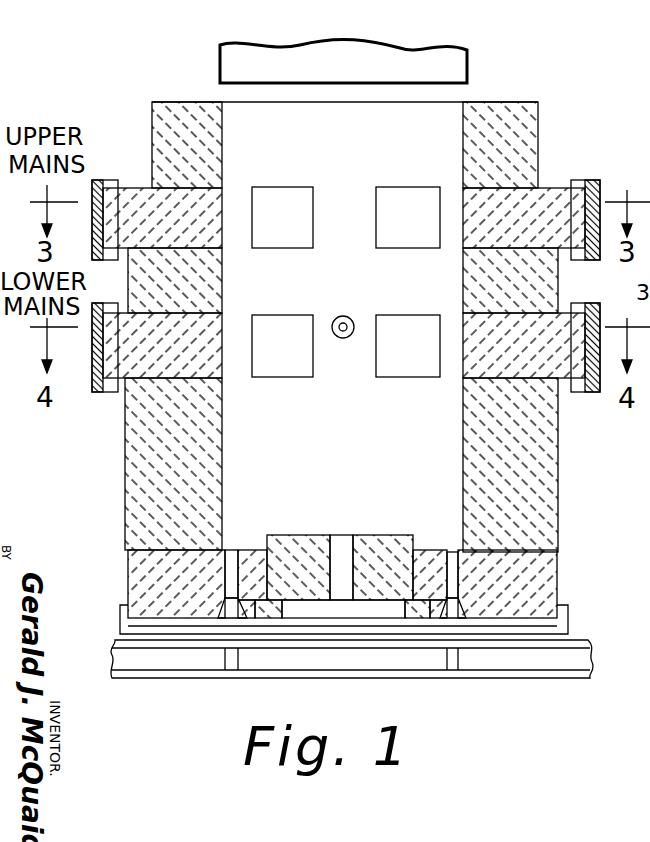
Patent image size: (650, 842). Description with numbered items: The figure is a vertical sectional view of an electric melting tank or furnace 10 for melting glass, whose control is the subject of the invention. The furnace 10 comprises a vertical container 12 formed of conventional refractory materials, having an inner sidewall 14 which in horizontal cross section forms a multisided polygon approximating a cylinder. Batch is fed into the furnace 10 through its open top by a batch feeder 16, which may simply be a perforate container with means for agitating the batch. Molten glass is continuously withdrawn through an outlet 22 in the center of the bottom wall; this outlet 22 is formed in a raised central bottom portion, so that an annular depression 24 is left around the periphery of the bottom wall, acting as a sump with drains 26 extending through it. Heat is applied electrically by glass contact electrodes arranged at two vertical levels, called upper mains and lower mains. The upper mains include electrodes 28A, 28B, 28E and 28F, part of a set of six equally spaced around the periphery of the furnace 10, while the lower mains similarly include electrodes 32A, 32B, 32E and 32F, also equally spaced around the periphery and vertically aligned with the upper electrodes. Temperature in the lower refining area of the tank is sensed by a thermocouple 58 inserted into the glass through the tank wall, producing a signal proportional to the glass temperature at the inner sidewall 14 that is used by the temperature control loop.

The electric melting tank or furnace 10 is at (530, 88).
The vertical container 12 is at (540, 118).
The inner sidewall 14 is at (464, 106).
The batch feeder 16 is at (458, 63).
The outlet 22 is at (341, 535).
The annular depression 24 is at (255, 550).
The drains 26 is at (231, 550).
The upper main electrode 28A is at (407, 187).
The upper main electrode 28B is at (463, 236).
The upper main electrode 28E is at (222, 190).
The upper main electrode 28F is at (287, 187).
The lower main electrode 32A is at (407, 378).
The lower main electrode 32B is at (463, 318).
The lower main electrode 32E is at (222, 332).
The lower main electrode 32F is at (280, 378).
The thermocouple 58 is at (343, 316).